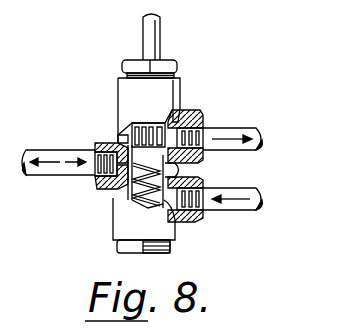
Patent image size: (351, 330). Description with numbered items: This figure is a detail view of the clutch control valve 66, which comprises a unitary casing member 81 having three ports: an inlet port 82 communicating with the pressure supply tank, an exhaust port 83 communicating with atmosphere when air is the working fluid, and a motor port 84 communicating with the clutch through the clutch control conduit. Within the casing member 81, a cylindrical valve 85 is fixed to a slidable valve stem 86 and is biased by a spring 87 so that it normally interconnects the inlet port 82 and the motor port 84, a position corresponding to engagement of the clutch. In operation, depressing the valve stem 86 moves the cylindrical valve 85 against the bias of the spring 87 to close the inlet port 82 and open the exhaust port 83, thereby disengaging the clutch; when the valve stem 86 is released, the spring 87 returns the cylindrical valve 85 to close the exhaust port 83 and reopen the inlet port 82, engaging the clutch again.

The clutch control valve 66 is at (220, 98).
The valve stem 86 is at (158, 39).
The motor port 84 is at (45, 171).
The casing member 81 is at (113, 192).
The exhaust port 83 is at (231, 127).
The inlet port 82 is at (230, 209).
The cylindrical valve 85 is at (187, 163).
The spring 87 is at (154, 206).